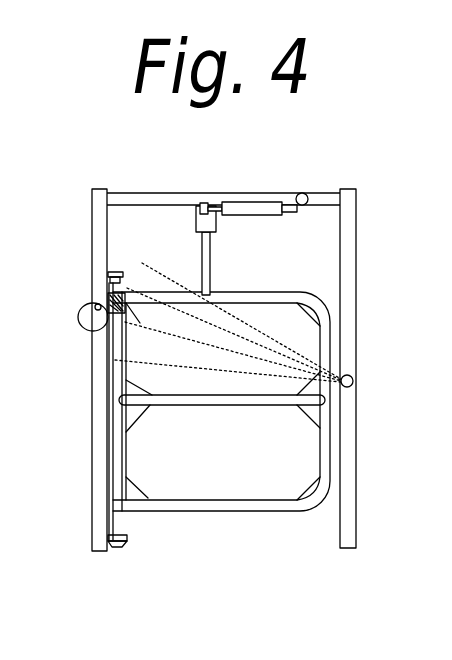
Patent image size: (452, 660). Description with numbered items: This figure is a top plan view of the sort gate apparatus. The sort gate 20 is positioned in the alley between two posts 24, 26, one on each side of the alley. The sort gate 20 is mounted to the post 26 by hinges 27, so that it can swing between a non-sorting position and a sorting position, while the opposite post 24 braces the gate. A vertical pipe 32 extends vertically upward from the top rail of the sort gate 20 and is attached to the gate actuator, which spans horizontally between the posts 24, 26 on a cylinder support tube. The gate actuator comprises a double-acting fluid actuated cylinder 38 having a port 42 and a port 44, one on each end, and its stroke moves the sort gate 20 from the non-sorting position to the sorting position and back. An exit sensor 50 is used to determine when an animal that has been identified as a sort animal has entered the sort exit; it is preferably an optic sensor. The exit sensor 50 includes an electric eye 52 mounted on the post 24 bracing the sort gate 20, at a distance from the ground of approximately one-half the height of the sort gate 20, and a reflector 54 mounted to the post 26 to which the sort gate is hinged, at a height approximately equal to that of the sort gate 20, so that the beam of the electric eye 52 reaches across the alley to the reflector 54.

The sort gate 20 is at (207, 510).
The post 24 is at (350, 517).
The post 26 is at (98, 513).
The hinges 27 is at (117, 270).
The vertical pipe 32 is at (201, 256).
The double-acting fluid actuated cylinder 38 is at (252, 202).
The port 42 is at (296, 193).
The port 44 is at (210, 200).
The exit sensor 50 is at (306, 341).
The electric eye 52 is at (353, 381).
The reflector 54 is at (98, 304).